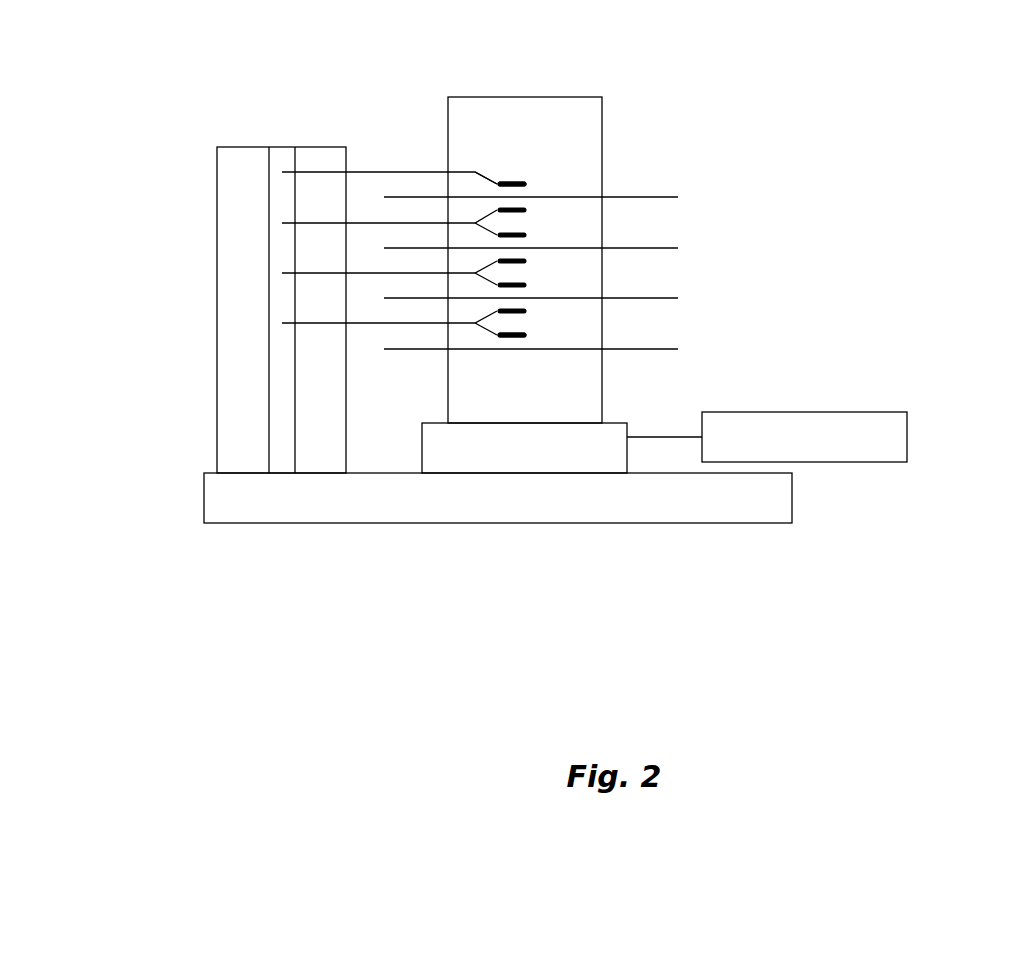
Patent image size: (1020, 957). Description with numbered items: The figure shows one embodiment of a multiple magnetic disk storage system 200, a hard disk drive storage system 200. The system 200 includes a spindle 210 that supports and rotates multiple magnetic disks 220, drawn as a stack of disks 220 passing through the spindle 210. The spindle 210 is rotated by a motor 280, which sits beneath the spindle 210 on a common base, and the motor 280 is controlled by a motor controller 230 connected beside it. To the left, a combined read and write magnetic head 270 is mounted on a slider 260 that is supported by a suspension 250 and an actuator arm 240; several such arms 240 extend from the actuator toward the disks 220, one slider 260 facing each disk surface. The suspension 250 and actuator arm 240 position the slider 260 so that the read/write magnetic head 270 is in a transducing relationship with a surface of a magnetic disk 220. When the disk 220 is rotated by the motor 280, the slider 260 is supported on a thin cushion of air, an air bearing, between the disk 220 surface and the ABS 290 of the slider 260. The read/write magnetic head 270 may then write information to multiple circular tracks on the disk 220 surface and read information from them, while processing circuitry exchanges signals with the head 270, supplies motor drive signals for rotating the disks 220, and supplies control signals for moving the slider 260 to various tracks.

The magnetic disk storage system 200 is at (88, 604).
The spindle 210 is at (592, 97).
The magnetic disk 220 is at (640, 196).
The motor controller 230 is at (830, 412).
The actuator arm 240 is at (397, 170).
The suspension 250 is at (487, 172).
The slider 260 is at (515, 180).
The read/write magnetic head 270 is at (525, 337).
The motor 280 is at (613, 423).
The ABS 290 is at (523, 181).